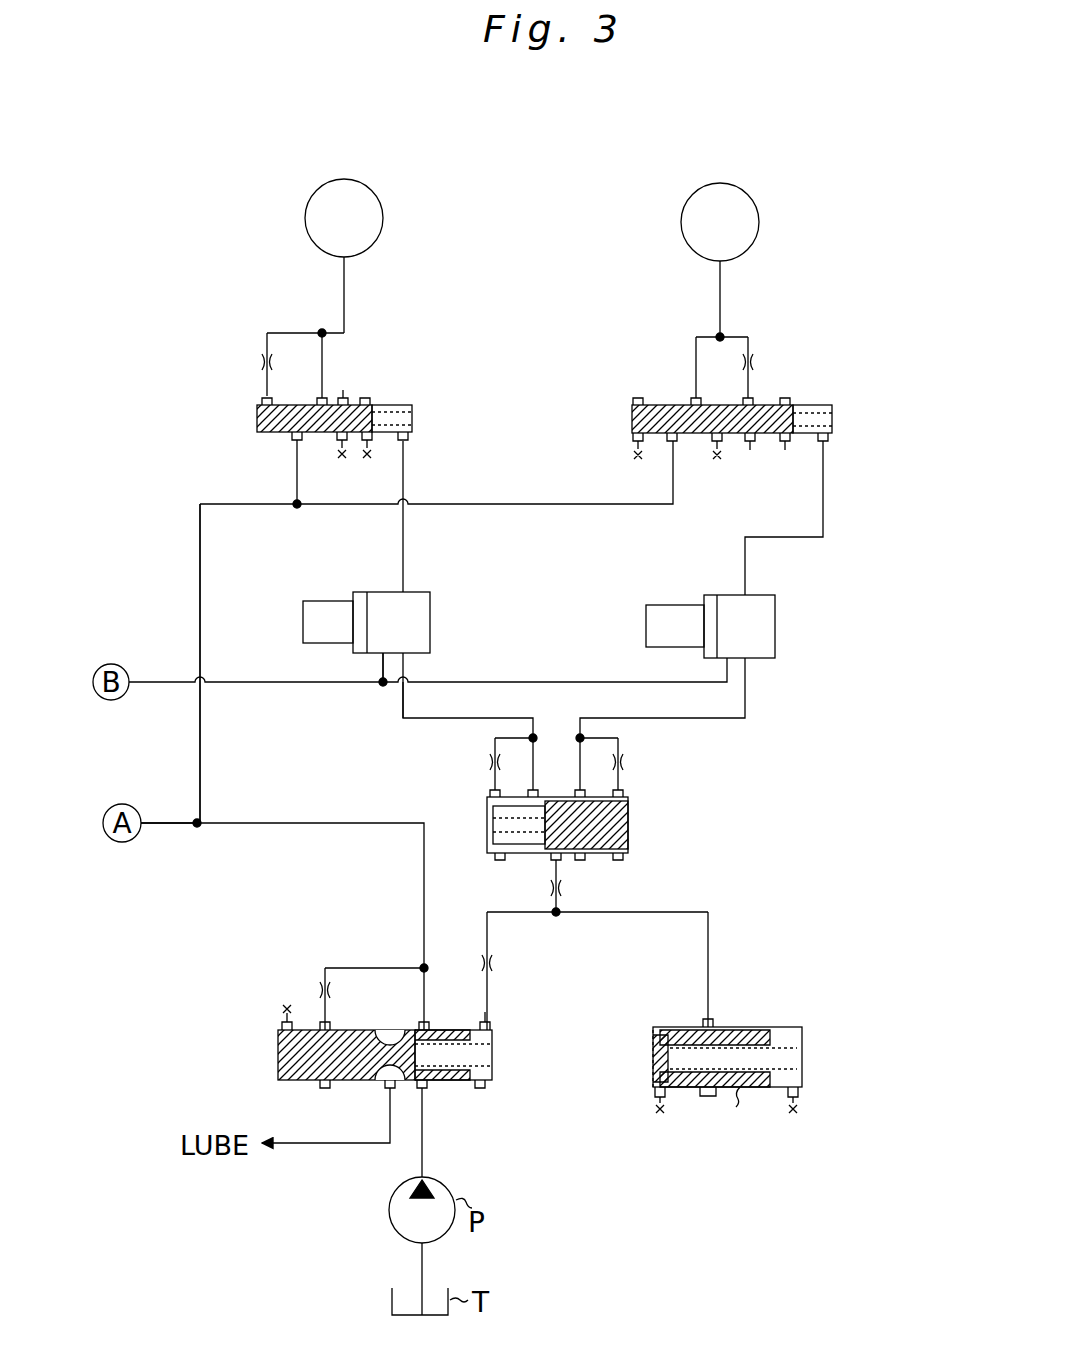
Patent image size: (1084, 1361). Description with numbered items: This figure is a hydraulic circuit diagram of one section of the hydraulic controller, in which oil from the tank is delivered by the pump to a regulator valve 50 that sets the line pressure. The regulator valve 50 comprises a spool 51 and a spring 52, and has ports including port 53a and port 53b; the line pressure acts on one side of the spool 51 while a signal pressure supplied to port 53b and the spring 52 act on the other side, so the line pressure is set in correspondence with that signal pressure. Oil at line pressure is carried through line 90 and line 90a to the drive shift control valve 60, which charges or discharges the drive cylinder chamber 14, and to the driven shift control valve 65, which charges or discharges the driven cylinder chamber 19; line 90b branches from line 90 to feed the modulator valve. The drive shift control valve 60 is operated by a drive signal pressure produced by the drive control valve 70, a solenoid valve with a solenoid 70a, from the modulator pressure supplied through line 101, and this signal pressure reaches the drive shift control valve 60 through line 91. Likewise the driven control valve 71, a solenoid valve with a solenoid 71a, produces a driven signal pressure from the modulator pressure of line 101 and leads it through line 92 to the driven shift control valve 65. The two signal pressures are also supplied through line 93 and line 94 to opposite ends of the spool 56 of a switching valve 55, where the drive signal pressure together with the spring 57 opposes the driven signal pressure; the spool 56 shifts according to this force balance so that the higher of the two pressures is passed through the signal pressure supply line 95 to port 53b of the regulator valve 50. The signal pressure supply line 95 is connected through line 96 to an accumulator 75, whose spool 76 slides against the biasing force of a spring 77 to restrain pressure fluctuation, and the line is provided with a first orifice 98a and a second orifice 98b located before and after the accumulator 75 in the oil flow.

The driven cylinder chamber 19 is at (383, 212).
The drive cylinder chamber 14 is at (756, 204).
The driven shift control valve 65 is at (402, 388).
The drive shift control valve 60 is at (812, 388).
The line 92 is at (405, 552).
The line 91 is at (825, 515).
The driven control valve 71 is at (431, 631).
The solenoid 71a is at (308, 626).
The drive control valve 70 is at (776, 635).
The solenoid 70a is at (672, 612).
The line 94 is at (474, 662).
The line 93 is at (712, 722).
The line 101 is at (312, 686).
The line 90 is at (282, 826).
The line 90a is at (203, 728).
The line 90b is at (160, 826).
The switching valve 55 is at (570, 812).
The spool 56 is at (630, 826).
The spring 57 is at (487, 840).
The signal pressure supply line 95 is at (505, 886).
The first orifice 98a is at (563, 892).
The second orifice 98b is at (494, 964).
The line 96 is at (708, 930).
The accumulator 75 is at (754, 1028).
The spring 77 is at (795, 1054).
The spool 76 is at (720, 1105).
The regulator valve 50 is at (428, 1048).
The spool 51 is at (350, 1072).
The spring 52 is at (493, 1062).
The port 53a is at (335, 1016).
The port 53b is at (495, 1036).